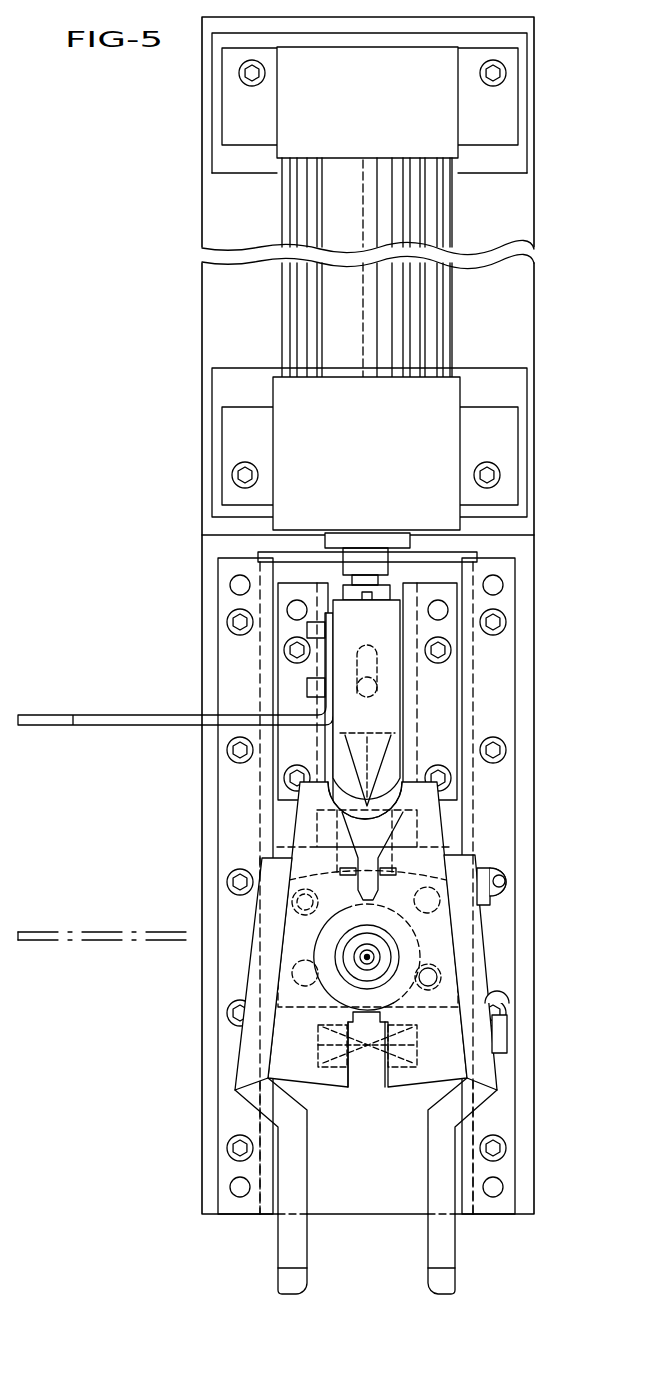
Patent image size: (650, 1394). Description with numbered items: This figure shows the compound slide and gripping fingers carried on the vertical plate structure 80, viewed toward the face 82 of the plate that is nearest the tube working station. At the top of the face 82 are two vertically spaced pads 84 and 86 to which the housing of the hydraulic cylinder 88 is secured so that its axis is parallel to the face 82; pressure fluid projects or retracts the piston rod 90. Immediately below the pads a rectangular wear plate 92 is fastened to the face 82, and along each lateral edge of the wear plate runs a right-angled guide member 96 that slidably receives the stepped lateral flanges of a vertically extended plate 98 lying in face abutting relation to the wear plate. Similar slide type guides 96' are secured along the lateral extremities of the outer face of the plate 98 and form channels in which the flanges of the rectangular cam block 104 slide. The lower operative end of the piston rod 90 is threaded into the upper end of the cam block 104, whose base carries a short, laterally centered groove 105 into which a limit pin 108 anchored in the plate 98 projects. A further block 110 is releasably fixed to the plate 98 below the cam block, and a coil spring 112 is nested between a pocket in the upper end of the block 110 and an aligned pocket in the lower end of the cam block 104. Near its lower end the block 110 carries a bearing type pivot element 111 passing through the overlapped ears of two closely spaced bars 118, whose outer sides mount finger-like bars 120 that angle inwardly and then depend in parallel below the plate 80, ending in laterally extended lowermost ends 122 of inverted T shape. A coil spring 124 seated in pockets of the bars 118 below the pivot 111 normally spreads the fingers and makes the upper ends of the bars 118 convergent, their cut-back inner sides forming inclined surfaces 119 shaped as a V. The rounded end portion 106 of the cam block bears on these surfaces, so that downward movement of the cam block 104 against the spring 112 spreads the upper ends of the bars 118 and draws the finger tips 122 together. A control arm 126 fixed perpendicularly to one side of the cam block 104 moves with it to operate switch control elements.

The vertical plate structure 80 is at (308, 656).
The face of the plate 82 is at (365, 1200).
The pad 84 is at (508, 108).
The pad 86 is at (508, 443).
The hydraulic cylinder 88 is at (460, 290).
The piston rod 90 is at (364, 574).
The wear plate 92 is at (292, 556).
The guide member 96 is at (216, 886).
The slide type guide 96' is at (459, 886).
The plate 98 is at (282, 572).
The cam block 104 is at (378, 630).
The groove 105 is at (379, 668).
The rounded end portion 106 is at (392, 775).
The limit pin 108 is at (383, 697).
The block 110 is at (433, 860).
The pivot element 111 is at (366, 954).
The coil spring 112 is at (371, 736).
The bar 118 is at (308, 1043).
The inclined surface 119 is at (420, 809).
The bar 120 is at (246, 1082).
The lowermost end 122 is at (448, 1281).
The coil spring 124 is at (370, 1066).
The control arm 126 is at (140, 713).